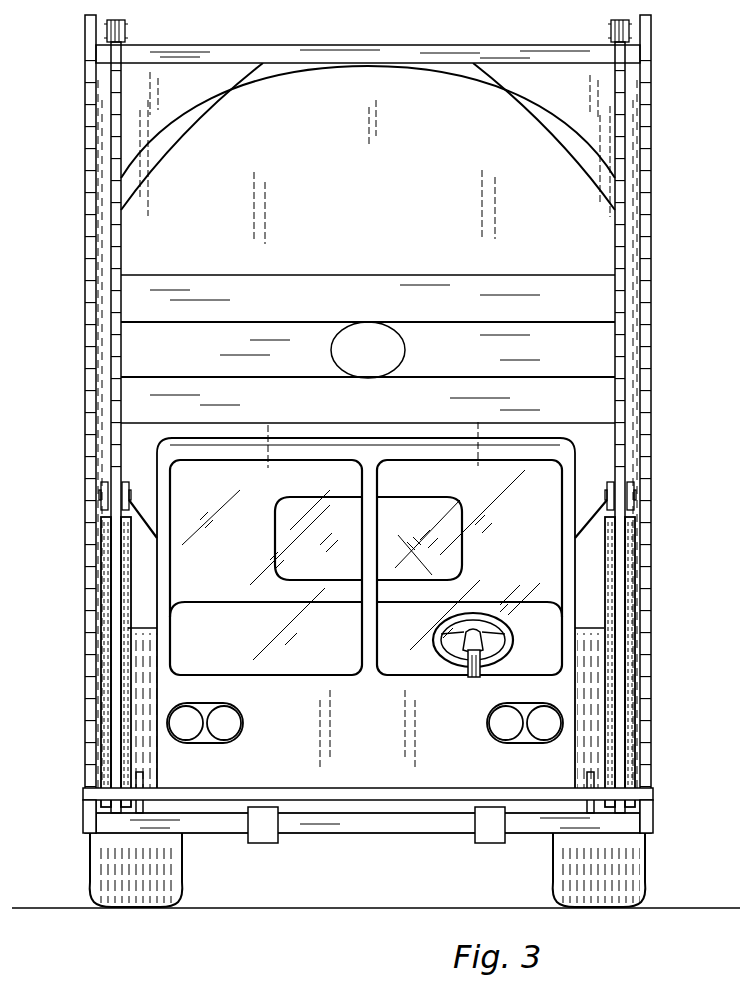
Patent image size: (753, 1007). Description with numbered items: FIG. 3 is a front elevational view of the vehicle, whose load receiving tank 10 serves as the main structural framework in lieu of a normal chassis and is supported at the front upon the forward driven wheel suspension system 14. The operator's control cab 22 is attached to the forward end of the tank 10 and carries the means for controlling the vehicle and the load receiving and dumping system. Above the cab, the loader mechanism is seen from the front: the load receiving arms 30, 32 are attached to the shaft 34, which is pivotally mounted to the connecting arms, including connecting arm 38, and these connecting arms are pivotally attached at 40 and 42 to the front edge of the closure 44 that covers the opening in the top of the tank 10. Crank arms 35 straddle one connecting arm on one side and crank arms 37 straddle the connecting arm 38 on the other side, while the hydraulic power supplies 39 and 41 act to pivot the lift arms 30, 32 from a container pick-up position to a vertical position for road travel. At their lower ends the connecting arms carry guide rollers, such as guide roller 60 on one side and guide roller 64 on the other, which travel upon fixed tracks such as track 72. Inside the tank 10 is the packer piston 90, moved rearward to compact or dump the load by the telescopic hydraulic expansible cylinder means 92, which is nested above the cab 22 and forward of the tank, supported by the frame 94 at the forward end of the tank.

The load receiving tank 10 is at (148, 172).
The forward driven wheel suspension system 14 is at (58, 866).
The operator's control cab 22 is at (283, 742).
The load receiving arm 30 is at (591, 772).
The load receiving arm 32 is at (139, 772).
The shaft 34 is at (348, 800).
The crank arms 35 is at (614, 746).
The crank arms 37 is at (108, 746).
The connecting arm 38 is at (115, 406).
The hydraulic power supply 39 is at (635, 542).
The pivotal attachment 40 is at (610, 30).
The hydraulic power supply 41 is at (103, 593).
The pivotal attachment 42 is at (128, 28).
The closure 44 is at (336, 45).
The guide roller 60 is at (640, 796).
The guide roller 64 is at (88, 796).
The fixed track 72 is at (92, 282).
The packer piston 90 is at (381, 230).
The telescopic hydraulic expansible cylinder means 92 is at (404, 352).
The frame 94 is at (197, 316).